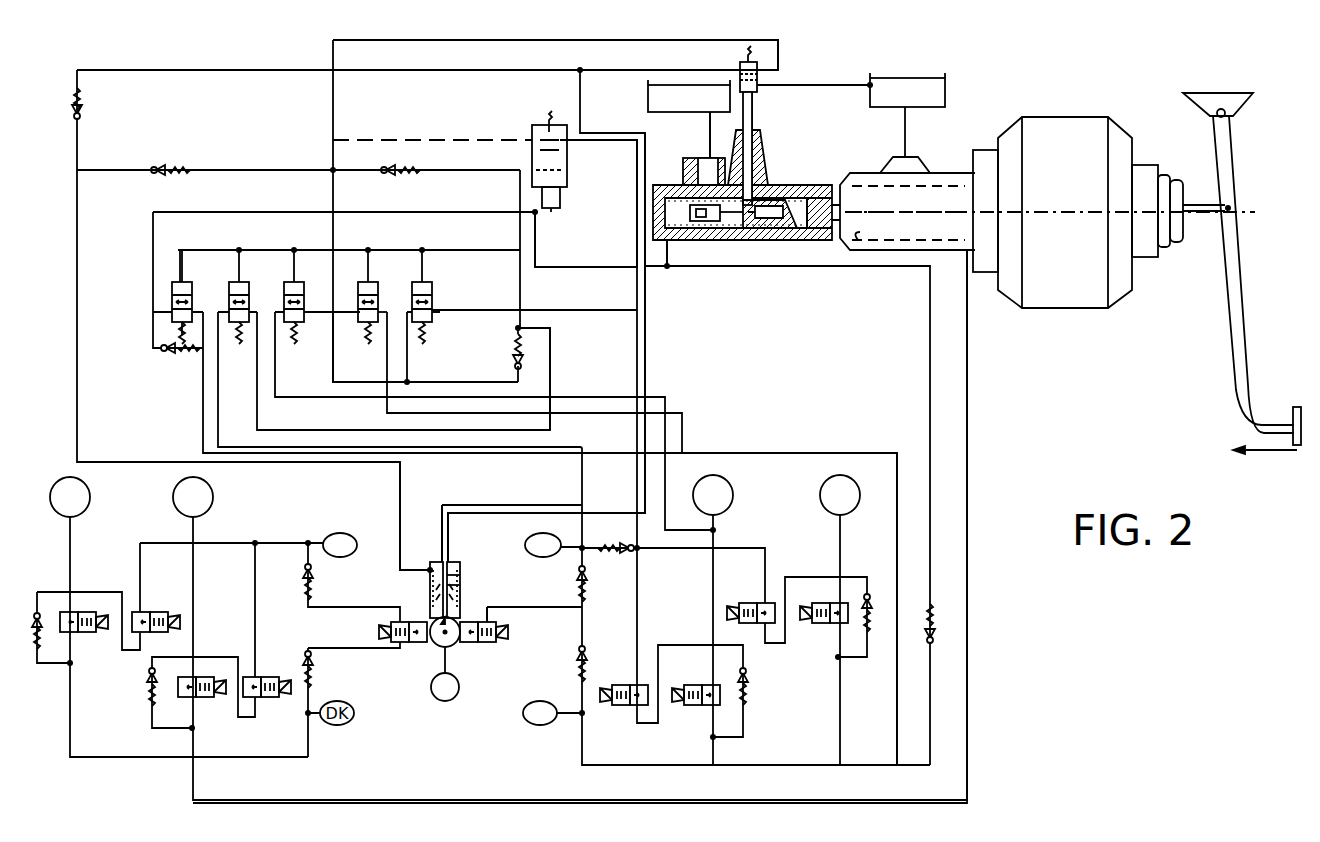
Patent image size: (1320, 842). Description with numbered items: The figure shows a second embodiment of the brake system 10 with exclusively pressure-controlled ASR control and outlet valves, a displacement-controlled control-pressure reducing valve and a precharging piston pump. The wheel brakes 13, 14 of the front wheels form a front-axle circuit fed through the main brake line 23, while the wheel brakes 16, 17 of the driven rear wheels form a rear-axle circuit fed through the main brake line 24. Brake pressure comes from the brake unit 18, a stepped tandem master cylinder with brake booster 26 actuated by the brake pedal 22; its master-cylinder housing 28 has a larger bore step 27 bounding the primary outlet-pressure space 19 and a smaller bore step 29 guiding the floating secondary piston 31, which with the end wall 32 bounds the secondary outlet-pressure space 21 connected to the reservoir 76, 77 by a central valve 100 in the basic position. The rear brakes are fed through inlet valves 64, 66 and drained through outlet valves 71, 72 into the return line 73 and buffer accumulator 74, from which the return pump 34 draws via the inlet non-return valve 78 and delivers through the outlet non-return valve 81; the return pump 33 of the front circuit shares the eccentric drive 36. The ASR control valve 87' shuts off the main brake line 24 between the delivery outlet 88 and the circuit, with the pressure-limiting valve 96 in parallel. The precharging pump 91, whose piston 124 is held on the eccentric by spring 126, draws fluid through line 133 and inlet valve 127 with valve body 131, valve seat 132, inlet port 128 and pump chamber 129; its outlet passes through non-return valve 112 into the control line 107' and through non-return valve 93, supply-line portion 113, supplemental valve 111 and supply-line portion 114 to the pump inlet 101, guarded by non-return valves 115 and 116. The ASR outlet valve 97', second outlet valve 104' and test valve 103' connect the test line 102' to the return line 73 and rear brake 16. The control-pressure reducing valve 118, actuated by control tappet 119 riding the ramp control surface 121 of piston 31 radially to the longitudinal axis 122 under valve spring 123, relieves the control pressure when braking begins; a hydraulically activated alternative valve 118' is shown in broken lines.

The brake system 10 is at (1000, 420).
The wheel brake of the left front wheel 13 is at (90, 492).
The wheel brake of the right front wheel 14 is at (174, 492).
The wheel brake of the left rear wheel 16 is at (734, 490).
The wheel brake of the right rear wheel 17 is at (822, 490).
The brake unit 18 is at (940, 170).
The primary outlet-pressure space 19 is at (812, 200).
The secondary outlet-pressure space 21 is at (668, 192).
The brake pedal 22 is at (1240, 325).
The main brake line of the front-axle brake circuit 23 is at (968, 360).
The main brake line of the rear-axle brake circuit 24 is at (896, 360).
The brake booster 26 is at (1072, 112).
The larger bore step 27 is at (862, 238).
The master-cylinder housing 28 is at (803, 238).
The smaller bore step 29 is at (705, 225).
The secondary piston 31 is at (752, 230).
The end wall 32 is at (638, 195).
The return piston pump of the front-axle brake circuit 33 is at (410, 644).
The return piston pump of the rear-axle brake circuit 34 is at (475, 645).
The eccentric pump drive 36 is at (431, 687).
The inlet valve 64 is at (697, 706).
The inlet valve 66 is at (826, 625).
The outlet valve 71 is at (622, 706).
The outlet valve 72 is at (745, 604).
The return line 73 is at (672, 550).
The buffer accumulator 74 is at (543, 534).
The chamber of the brake-fluid reservoir 76 is at (648, 106).
The brake-fluid reservoir 77 is at (878, 78).
The inlet non-return valve 78 is at (580, 600).
The outlet non-return valve 81 is at (578, 660).
The ASR control valve 87' is at (191, 297).
The rear-axle brake-pressure outlet 88 is at (670, 266).
The precharging pump 91 is at (85, 115).
The outlet non-return valve 93 is at (400, 174).
The pressure-limiting valve 96 is at (930, 610).
The ASR outlet valve 97' is at (444, 297).
The central valve 100 is at (640, 225).
The pump inlet 101 is at (626, 547).
The test line 102' is at (425, 349).
The test valve 103' is at (387, 297).
The second ASR outlet valve 104' is at (318, 297).
The control line 107' is at (205, 146).
The supplemental valve 111 is at (247, 290).
The outlet non-return valve 112 is at (172, 166).
The supply-line portion 113 is at (552, 360).
The supply-line portion 114 is at (172, 356).
The non-return valve 115 is at (510, 362).
The non-return valve 116 is at (608, 556).
The control-pressure reducing valve 118 is at (782, 76).
The hydraulically activatable control-pressure reducing valve 118' is at (517, 155).
The control tappet 119 is at (753, 112).
The control surface 121 is at (766, 205).
The longitudinal axis 122 is at (905, 207).
The valve spring 123 is at (745, 55).
The piston 124 is at (476, 614).
The spring 126 is at (430, 580).
The inlet valve 127 is at (462, 586).
The inlet port 128 is at (448, 562).
The pump chamber 129 is at (461, 578).
The valve body 131 is at (456, 570).
The valve seat 132 is at (418, 548).
The brake-fluid line 133 is at (650, 360).